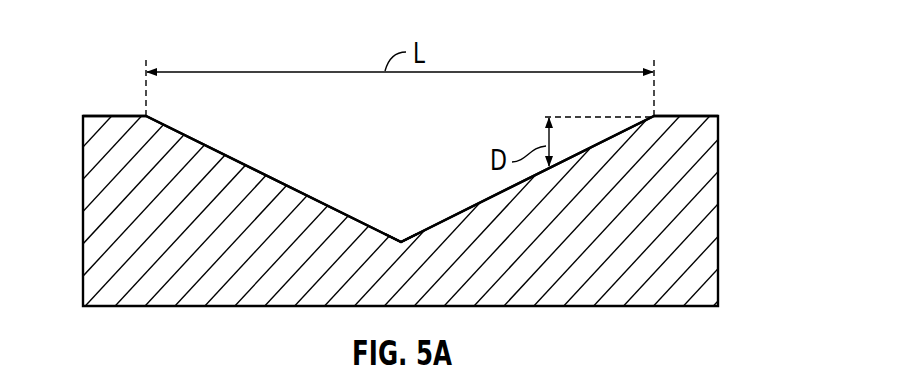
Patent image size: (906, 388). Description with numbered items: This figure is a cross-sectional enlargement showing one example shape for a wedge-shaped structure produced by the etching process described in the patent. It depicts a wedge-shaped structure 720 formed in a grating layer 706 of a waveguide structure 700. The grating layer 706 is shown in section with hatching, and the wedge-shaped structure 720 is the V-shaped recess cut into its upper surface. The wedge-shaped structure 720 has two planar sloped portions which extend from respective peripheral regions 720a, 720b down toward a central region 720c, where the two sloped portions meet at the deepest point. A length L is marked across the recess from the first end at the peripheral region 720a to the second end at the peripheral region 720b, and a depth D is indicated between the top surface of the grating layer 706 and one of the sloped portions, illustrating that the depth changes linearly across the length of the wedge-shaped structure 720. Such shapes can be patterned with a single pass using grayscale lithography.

The waveguide structure 700 is at (452, 167).
The grating layer 706 is at (97, 228).
The wedge-shaped structure 720 is at (272, 132).
The peripheral region 720a is at (127, 114).
The peripheral region 720b is at (683, 114).
The central region 720c is at (401, 240).